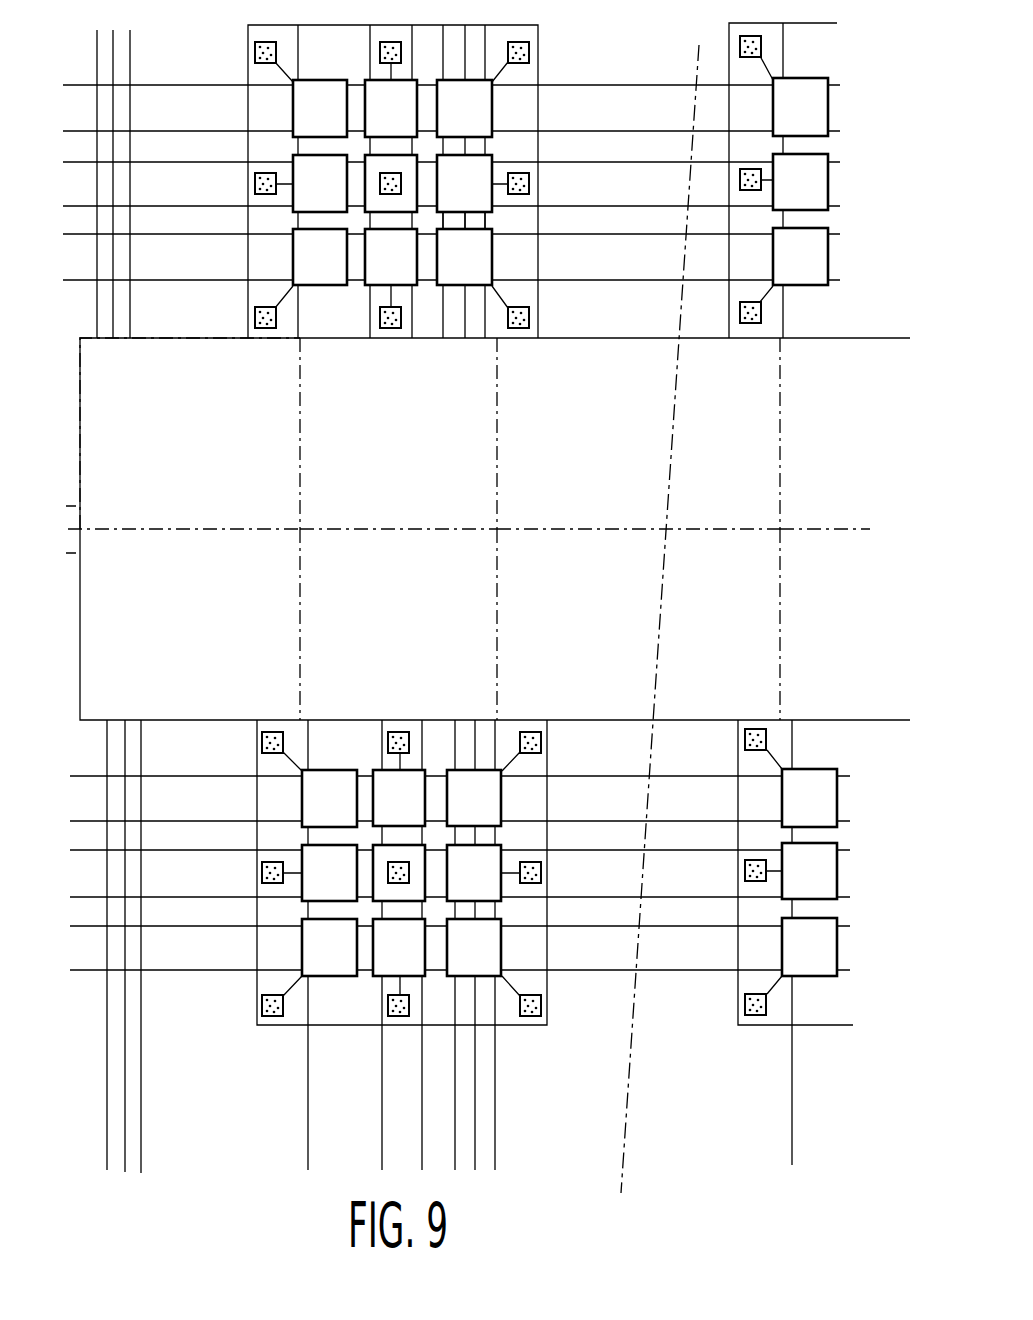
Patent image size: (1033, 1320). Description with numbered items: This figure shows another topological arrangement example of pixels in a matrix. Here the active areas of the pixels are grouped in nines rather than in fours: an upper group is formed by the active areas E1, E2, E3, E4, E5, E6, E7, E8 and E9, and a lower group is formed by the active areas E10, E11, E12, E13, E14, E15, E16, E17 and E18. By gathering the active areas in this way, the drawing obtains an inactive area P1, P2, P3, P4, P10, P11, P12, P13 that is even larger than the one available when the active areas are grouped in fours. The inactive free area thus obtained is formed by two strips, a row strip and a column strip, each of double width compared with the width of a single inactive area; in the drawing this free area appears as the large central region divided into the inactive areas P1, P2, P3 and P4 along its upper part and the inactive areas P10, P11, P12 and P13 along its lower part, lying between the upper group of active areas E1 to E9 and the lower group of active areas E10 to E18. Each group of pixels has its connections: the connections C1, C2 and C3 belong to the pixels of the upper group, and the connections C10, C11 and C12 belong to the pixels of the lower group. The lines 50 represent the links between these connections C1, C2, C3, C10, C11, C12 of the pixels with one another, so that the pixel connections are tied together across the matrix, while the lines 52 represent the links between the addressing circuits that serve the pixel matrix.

The lines 50 is at (487, 219).
The lines 52 is at (97, 312).
The active area E1 is at (300, 254).
The active area E2 is at (383, 274).
The active area E3 is at (482, 270).
The active area E4 is at (300, 165).
The active area E5 is at (402, 163).
The active area E6 is at (482, 168).
The active area E7 is at (293, 100).
The active area E8 is at (370, 90).
The active area E9 is at (485, 97).
The active area E10 is at (318, 806).
The active area E11 is at (375, 782).
The active area E12 is at (487, 808).
The active area E13 is at (318, 860).
The active area E14 is at (398, 850).
The active area E15 is at (483, 862).
The active area E16 is at (312, 948).
The active area E17 is at (382, 967).
The active area E18 is at (483, 952).
The connection C1 is at (257, 336).
The connection C2 is at (393, 336).
The connection C3 is at (548, 336).
The connection C10 is at (272, 722).
The connection C11 is at (396, 722).
The connection C12 is at (528, 722).
The inactive area P1 is at (203, 456).
The inactive area P2 is at (413, 456).
The inactive area P3 is at (604, 456).
The inactive area P4 is at (746, 456).
The inactive area P10 is at (202, 641).
The inactive area P11 is at (417, 641).
The inactive area P12 is at (599, 641).
The inactive area P13 is at (736, 641).